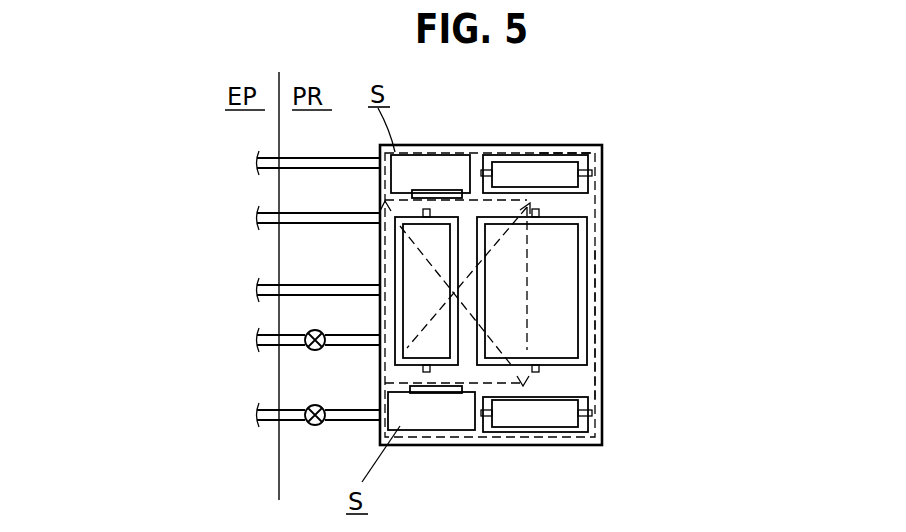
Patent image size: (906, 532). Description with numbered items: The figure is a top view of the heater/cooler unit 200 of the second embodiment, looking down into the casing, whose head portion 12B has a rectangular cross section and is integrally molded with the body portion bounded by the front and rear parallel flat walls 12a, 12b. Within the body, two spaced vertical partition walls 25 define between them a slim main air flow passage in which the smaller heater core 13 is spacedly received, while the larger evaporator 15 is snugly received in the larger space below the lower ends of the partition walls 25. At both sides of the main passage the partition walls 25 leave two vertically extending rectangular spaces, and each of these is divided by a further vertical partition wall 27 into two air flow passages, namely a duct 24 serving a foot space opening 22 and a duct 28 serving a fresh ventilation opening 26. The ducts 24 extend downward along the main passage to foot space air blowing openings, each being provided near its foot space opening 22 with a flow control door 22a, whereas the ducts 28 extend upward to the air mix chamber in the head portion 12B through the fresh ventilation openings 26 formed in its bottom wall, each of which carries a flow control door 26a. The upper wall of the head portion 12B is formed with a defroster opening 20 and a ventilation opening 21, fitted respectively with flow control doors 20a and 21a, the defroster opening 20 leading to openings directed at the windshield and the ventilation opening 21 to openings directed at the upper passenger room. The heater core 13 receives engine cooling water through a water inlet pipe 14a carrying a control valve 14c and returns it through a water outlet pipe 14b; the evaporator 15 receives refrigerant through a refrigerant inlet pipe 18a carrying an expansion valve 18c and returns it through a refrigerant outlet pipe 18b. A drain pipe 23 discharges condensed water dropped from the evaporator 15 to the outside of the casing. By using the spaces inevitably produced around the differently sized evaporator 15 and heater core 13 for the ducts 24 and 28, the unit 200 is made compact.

The heater/cooler unit 200 is at (790, 121).
The head portion 12B is at (606, 140).
The front flat wall 12a is at (376, 440).
The rear flat wall 12b is at (602, 442).
The heater core 13 is at (532, 332).
The water inlet pipe 14a is at (265, 351).
The water outlet pipe 14b is at (314, 216).
The control valve 14c is at (310, 332).
The evaporator 15 is at (597, 322).
The refrigerant inlet pipe 18a is at (262, 426).
The refrigerant outlet pipe 18b is at (314, 160).
The expansion valve 18c is at (310, 407).
The defroster opening 20 is at (405, 270).
The flow control door 20a is at (407, 257).
The ventilation opening 21 is at (565, 247).
The flow control door 21a is at (565, 290).
The foot space opening 22 is at (407, 186).
The flow control door 22a is at (440, 192).
The drain pipe 23 is at (257, 290).
The duct 24 is at (447, 152).
The partition wall 25 is at (570, 196).
The fresh ventilation opening 26 is at (547, 162).
The flow control door 26a is at (565, 172).
The partition wall 27 is at (482, 160).
The duct 28 is at (567, 150).